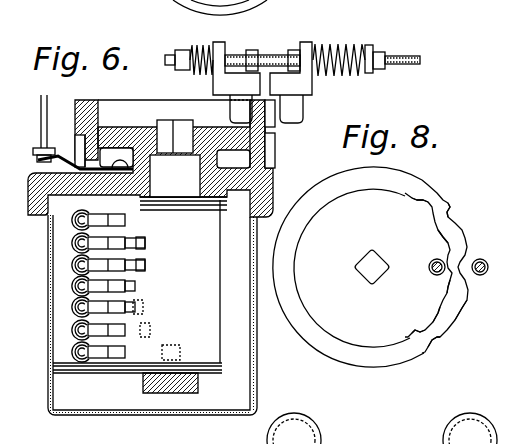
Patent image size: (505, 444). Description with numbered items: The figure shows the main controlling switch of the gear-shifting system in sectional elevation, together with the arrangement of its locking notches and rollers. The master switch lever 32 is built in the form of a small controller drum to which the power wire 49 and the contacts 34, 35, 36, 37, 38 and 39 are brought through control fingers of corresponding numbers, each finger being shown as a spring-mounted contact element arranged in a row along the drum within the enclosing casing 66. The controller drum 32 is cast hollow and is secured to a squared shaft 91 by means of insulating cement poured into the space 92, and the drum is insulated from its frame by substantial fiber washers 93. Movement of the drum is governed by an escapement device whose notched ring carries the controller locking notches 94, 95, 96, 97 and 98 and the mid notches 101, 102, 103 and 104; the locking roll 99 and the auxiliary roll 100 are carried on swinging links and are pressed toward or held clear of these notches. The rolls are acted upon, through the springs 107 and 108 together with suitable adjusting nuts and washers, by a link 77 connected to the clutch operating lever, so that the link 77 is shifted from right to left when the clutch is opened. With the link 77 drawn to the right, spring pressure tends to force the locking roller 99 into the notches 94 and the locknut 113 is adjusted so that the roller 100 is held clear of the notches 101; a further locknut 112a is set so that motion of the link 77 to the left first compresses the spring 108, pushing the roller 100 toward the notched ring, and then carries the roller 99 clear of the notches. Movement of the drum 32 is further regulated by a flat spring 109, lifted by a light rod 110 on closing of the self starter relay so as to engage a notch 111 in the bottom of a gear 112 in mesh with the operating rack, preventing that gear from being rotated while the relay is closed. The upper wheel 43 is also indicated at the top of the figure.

In FIG. 6, the master switch lever 32 is at (221, 307).
In FIG. 6, the contact 34 is at (95, 273).
In FIG. 6, the contact 35 is at (95, 294).
In FIG. 6, the contact 36 is at (97, 315).
In FIG. 6, the contact 37 is at (95, 338).
In FIG. 6, the contact 38 is at (95, 360).
In FIG. 6, the contact 39 is at (95, 251).
In FIG. 8, the contact 39 is at (496, 191).
In FIG. 6, the wheel 43 is at (268, 1).
In FIG. 6, the power wire 49 is at (100, 222).
In FIG. 8, the power wire 49 is at (495, 166).
In FIG. 6, the casing 66 is at (52, 387).
In FIG. 6, the link 77 is at (404, 57).
In FIG. 6, the squared shaft 91 is at (163, 125).
In FIG. 6, the insulating cement space 92 is at (175, 176).
In FIG. 6, the fiber washer 93 is at (218, 203).
In FIG. 8, the controller locking notch 94 is at (427, 207).
In FIG. 8, the controller locking notch 95 is at (445, 244).
In FIG. 8, the controller locking notch 96 is at (448, 287).
In FIG. 8, the controller locking notch 97 is at (438, 313).
In FIG. 8, the controller locking notch 98 is at (418, 330).
In FIG. 6, the locking roll 99 is at (231, 108).
In FIG. 8, the locking roll 99 is at (429, 267).
In FIG. 6, the auxiliary roll 100 is at (300, 105).
In FIG. 8, the auxiliary roll 100 is at (482, 276).
In FIG. 8, the mid notch 101 is at (452, 217).
In FIG. 6, the mid notch 102 is at (272, 122).
In FIG. 8, the mid notch 102 is at (477, 260).
In FIG. 8, the mid notch 103 is at (459, 313).
In FIG. 8, the mid notch 104 is at (431, 340).
In FIG. 6, the spring 107 is at (205, 44).
In FIG. 6, the spring 108 is at (348, 45).
In FIG. 6, the flat spring 109 is at (62, 172).
In FIG. 6, the light rod 110 is at (44, 123).
In FIG. 6, the notch 111 is at (80, 152).
In FIG. 6, the gear 112 is at (269, 150).
In FIG. 6, the nut 112a is at (257, 42).
In FIG. 6, the locknut 113 is at (294, 50).